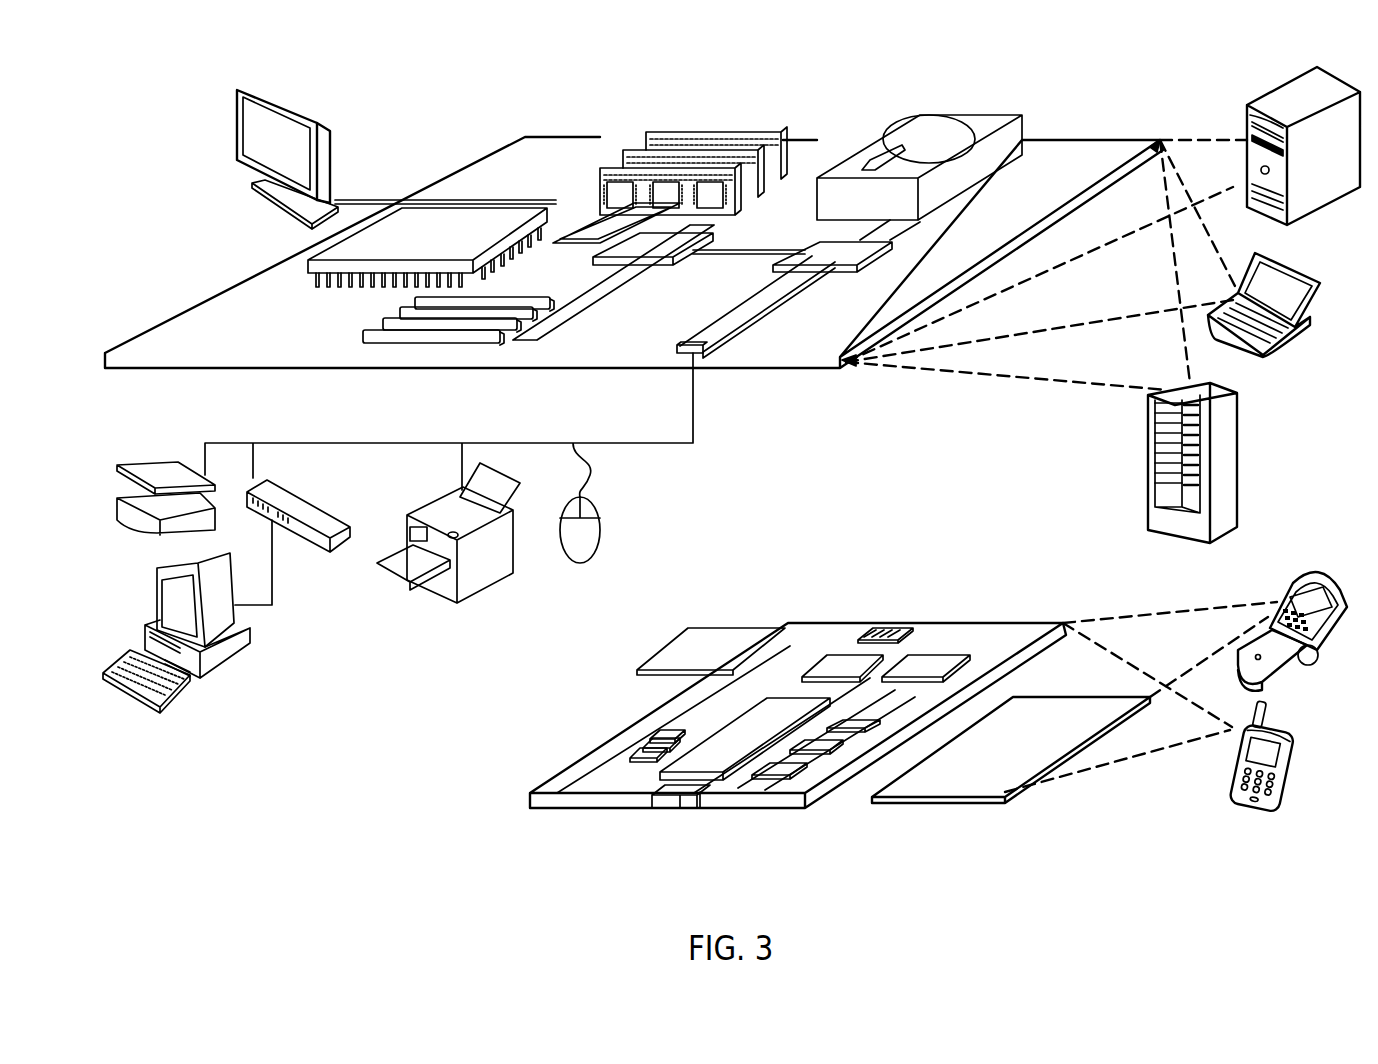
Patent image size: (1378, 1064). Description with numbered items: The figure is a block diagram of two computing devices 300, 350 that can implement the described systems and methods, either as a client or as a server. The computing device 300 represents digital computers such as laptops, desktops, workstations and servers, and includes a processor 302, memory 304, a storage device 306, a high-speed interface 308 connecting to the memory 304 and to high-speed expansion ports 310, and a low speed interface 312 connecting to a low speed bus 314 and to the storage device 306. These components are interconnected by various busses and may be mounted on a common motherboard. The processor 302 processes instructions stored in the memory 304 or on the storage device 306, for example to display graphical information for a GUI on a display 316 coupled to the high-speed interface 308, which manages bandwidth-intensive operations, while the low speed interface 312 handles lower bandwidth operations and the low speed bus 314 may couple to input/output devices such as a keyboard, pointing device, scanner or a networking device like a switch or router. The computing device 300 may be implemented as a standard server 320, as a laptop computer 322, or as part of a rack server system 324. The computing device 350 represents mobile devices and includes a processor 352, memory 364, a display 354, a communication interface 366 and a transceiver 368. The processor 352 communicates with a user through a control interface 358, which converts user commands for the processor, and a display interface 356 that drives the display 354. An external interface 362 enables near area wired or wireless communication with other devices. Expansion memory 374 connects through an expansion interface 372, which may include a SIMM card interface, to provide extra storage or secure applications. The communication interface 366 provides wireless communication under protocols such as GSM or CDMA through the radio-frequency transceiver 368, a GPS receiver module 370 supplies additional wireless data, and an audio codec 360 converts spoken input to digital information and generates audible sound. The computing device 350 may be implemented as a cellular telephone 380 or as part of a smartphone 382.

The computing device 300 is at (448, 114).
The processor 302 is at (317, 267).
The memory 304 is at (647, 133).
The storage device 306 is at (901, 120).
The high-speed interface 308 is at (627, 243).
The high-speed expansion ports 310 is at (390, 323).
The low speed interface 312 is at (813, 248).
The low speed bus 314 is at (704, 354).
The display 316 is at (243, 84).
The standard server 320 is at (1249, 122).
The laptop computer 322 is at (1309, 280).
The rack server system 324 is at (1149, 488).
The computing device 350 is at (508, 800).
The processor 352 is at (715, 757).
The display 354 is at (970, 780).
The display interface 356 is at (790, 770).
The control interface 358 is at (823, 748).
The audio codec 360 is at (853, 726).
The external interface 362 is at (680, 803).
The memory 364 is at (627, 754).
The communication interface 366 is at (843, 665).
The transceiver 368 is at (927, 667).
The GPS receiver module 370 is at (895, 630).
The expansion interface 372 is at (773, 641).
The expansion memory 374 is at (690, 638).
The cellular telephone 380 is at (1295, 579).
The smartphone 382 is at (1230, 768).